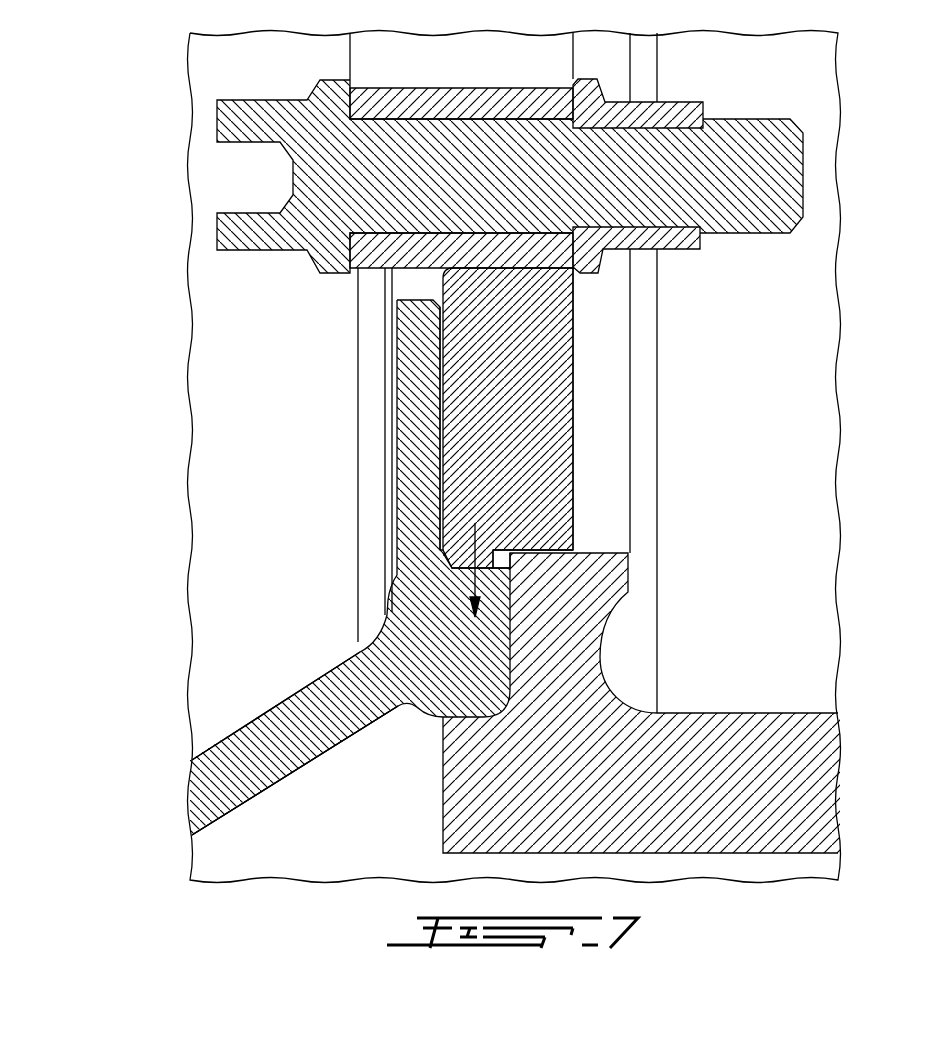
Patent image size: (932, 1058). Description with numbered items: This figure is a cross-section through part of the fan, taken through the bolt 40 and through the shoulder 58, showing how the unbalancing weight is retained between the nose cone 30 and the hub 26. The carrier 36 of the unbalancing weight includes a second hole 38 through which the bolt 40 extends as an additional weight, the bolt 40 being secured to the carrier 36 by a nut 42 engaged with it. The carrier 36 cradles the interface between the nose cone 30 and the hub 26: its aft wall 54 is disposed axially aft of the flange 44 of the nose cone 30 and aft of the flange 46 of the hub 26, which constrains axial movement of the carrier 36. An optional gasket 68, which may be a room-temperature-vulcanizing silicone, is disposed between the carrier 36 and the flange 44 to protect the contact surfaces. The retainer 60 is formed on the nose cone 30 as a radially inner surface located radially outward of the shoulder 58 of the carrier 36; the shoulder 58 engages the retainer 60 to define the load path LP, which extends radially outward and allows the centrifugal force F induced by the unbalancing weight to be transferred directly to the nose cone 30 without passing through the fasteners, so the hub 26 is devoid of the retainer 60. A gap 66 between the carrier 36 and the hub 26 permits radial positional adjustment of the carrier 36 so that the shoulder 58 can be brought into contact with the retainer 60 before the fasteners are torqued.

The carrier 36 is at (326, 62).
The bolt 40 is at (240, 114).
The nut 42 is at (660, 98).
The second hole 38 is at (377, 231).
The aft wall 54 is at (532, 318).
The gasket 68 is at (443, 392).
The flange 44 is at (412, 442).
The shoulder 58 is at (573, 466).
The load path LP is at (470, 535).
The gap 66 is at (560, 550).
The flange 46 is at (565, 620).
The retainer 60 is at (573, 467).
The hub 26 is at (783, 778).
The nose cone 30 is at (217, 780).
The centrifugal force F is at (477, 586).